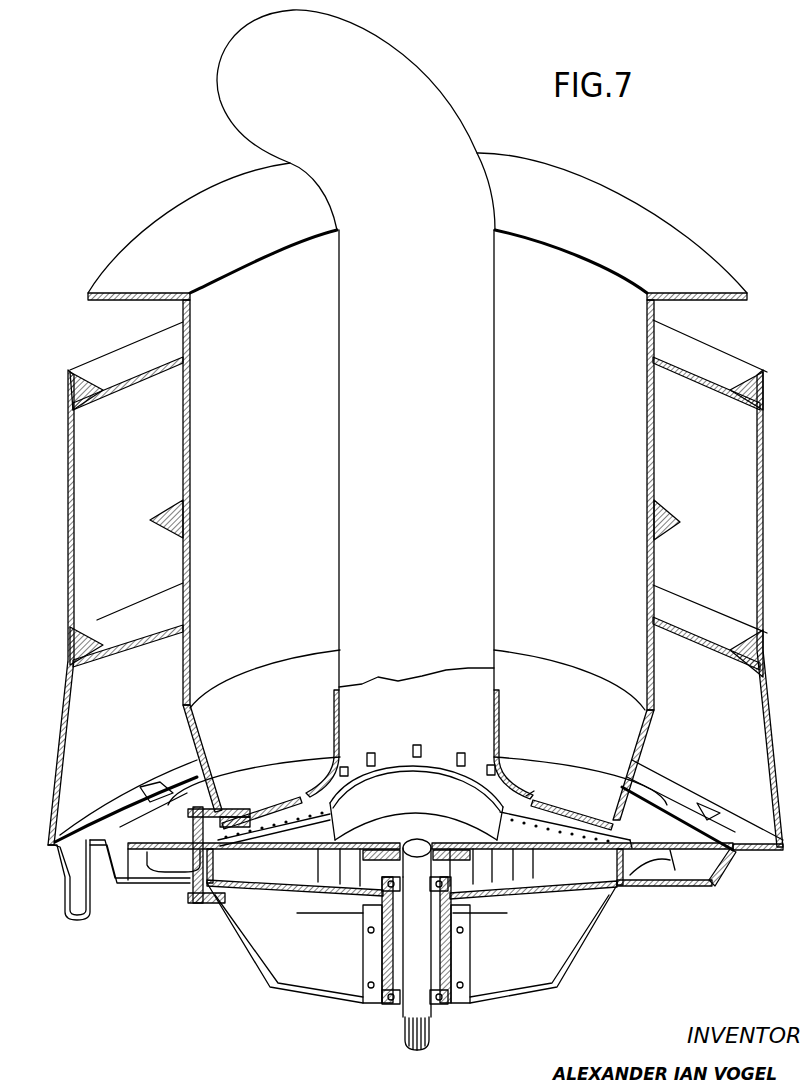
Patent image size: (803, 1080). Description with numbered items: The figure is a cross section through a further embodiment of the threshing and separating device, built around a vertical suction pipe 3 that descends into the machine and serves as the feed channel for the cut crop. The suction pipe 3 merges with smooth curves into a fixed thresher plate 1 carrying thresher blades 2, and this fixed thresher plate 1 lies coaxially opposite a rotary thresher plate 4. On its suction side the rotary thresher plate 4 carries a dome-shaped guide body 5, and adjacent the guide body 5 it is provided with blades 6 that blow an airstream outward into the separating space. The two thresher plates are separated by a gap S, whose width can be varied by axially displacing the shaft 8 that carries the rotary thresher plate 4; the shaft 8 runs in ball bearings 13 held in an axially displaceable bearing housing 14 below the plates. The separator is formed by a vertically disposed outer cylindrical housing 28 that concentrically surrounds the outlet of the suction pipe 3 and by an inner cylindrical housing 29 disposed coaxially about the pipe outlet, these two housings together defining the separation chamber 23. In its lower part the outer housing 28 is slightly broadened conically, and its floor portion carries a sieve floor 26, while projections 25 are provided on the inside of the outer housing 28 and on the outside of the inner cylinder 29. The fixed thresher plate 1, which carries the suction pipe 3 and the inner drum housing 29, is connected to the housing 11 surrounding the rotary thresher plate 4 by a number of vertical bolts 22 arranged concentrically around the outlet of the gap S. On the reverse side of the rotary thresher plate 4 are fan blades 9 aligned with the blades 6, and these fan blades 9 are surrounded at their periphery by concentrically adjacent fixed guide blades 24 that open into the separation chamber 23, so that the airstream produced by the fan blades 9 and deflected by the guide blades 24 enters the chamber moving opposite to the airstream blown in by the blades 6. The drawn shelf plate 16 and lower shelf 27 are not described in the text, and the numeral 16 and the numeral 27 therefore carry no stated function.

The fixed thresher plate 1 is at (545, 810).
The thresher blades 2 is at (494, 778).
The suction pipe 3 is at (358, 558).
The rotary thresher plate 4 is at (440, 840).
The dome-shaped guide body 5 is at (405, 765).
The blades 6 is at (312, 830).
The shaft 8 is at (410, 1005).
The fan blades 9 is at (310, 872).
The housing 11 is at (590, 912).
The ball bearings 13 is at (446, 1004).
The bearing housing 14 is at (385, 952).
The horizontal plate 16 is at (245, 838).
The vertical bolts 22 is at (197, 870).
The separation chamber 23 is at (131, 404).
The fixed guide blades 24 is at (660, 862).
The projections 25 is at (690, 352).
The sieve floor 26 is at (97, 858).
The right lower shelf 27 is at (670, 703).
The cylindrical housing 28 is at (62, 738).
The cylindrical housing 29 is at (654, 462).
The gap S is at (634, 845).